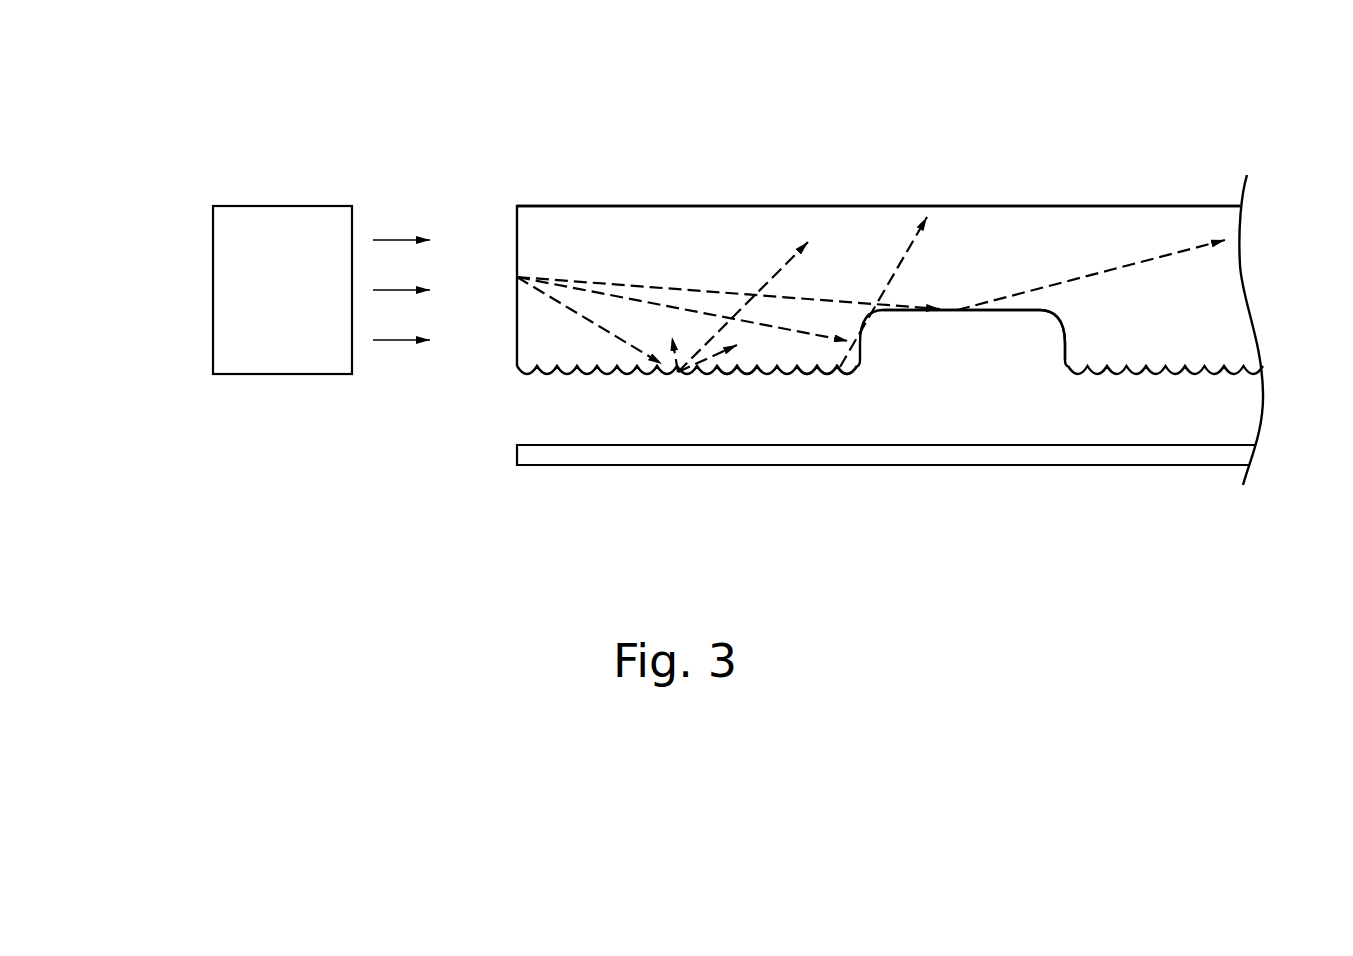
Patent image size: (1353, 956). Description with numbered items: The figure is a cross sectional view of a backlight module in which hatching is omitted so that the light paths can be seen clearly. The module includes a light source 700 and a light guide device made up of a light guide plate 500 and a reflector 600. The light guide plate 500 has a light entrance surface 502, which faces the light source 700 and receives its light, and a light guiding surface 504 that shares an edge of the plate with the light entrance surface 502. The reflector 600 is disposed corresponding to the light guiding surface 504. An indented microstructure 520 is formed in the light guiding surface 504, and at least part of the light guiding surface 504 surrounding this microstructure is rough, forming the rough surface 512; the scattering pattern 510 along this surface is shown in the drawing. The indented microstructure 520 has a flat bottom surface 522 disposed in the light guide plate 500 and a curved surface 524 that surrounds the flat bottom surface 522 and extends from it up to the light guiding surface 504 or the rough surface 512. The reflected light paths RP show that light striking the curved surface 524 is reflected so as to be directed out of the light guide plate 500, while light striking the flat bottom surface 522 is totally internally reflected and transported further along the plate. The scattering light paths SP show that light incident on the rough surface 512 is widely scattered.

The light source 700 is at (213, 282).
The light guide plate 500 is at (912, 206).
The light entrance surface 502 is at (515, 230).
The light guiding surface 504 is at (530, 373).
The scattering pattern 510 is at (827, 357).
The rough surface 512 is at (740, 373).
The scattering light paths SP is at (723, 367).
The reflected light paths RP is at (897, 267).
The indented microstructure 520 is at (1103, 107).
The flat bottom surface 522 is at (1008, 308).
The curved surface 524 is at (1060, 333).
The reflector 600 is at (592, 455).